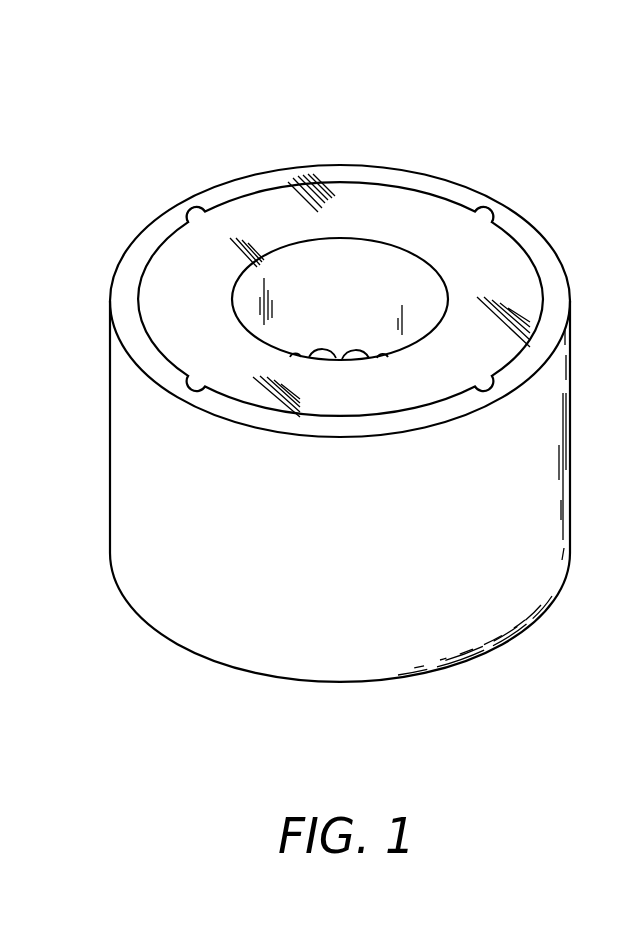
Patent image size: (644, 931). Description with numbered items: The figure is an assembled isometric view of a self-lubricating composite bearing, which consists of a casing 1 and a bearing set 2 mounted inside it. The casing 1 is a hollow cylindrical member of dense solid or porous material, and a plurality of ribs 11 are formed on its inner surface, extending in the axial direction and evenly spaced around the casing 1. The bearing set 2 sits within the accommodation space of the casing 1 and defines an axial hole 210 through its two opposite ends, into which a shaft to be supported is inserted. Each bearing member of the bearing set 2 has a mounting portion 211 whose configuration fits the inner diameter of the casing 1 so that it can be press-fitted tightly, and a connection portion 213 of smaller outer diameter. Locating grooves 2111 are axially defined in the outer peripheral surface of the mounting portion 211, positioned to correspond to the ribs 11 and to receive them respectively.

The casing 1 is at (135, 448).
The bearing set 2 is at (324, 232).
The ribs 11 is at (197, 211).
The axial hole 210 is at (342, 272).
The mounting portion 211 is at (498, 267).
The locating grooves 2111 is at (485, 212).
The connection portion 213 is at (312, 348).